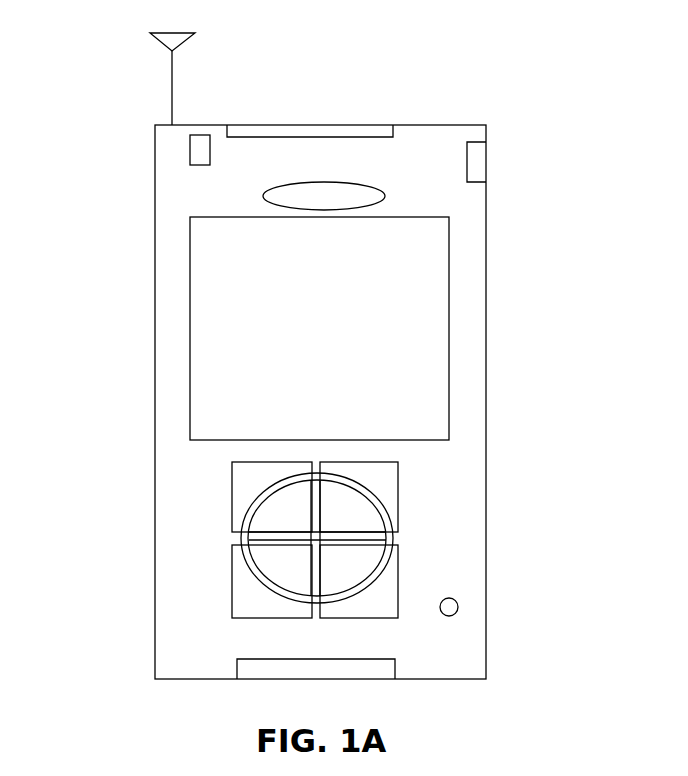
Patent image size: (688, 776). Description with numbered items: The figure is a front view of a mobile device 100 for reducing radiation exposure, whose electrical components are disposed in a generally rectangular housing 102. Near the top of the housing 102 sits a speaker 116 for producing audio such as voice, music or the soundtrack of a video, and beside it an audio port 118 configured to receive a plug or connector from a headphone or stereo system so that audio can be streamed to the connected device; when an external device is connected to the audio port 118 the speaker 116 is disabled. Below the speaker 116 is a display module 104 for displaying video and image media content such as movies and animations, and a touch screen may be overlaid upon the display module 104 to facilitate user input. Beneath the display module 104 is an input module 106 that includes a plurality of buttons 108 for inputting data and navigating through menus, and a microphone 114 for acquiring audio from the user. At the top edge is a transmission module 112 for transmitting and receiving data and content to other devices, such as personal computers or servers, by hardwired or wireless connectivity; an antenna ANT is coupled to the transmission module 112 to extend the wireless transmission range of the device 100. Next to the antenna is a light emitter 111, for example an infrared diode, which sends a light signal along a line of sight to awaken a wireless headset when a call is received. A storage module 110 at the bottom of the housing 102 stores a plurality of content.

The mobile device 100 is at (580, 219).
The housing 102 is at (155, 198).
The display module 104 is at (449, 300).
The input module 106 is at (413, 548).
The buttons 108 is at (282, 512).
The storage module 110 is at (237, 668).
The light emitter 111 is at (200, 135).
The transmission module 112 is at (347, 125).
The microphone 114 is at (452, 598).
The speaker 116 is at (325, 182).
The audio port 118 is at (486, 160).
The antenna ANT is at (172, 69).